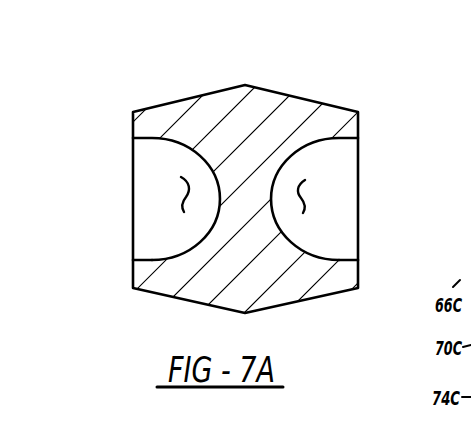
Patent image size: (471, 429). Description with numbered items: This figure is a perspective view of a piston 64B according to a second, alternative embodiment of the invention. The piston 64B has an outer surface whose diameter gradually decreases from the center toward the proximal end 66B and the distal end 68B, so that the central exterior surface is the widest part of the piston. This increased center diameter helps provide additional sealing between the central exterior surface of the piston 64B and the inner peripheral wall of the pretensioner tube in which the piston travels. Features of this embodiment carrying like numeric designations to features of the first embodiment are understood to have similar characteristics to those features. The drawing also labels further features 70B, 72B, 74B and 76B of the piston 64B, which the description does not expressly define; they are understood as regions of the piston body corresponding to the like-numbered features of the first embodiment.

The piston 64B is at (155, 65).
The proximal end 66B is at (158, 138).
The distal end 68B is at (337, 138).
The first arcuate recess 70B is at (183, 190).
The second arcuate recess 72B is at (303, 192).
The first lower flat surface 74B is at (157, 258).
The second lower flat surface 76B is at (327, 258).